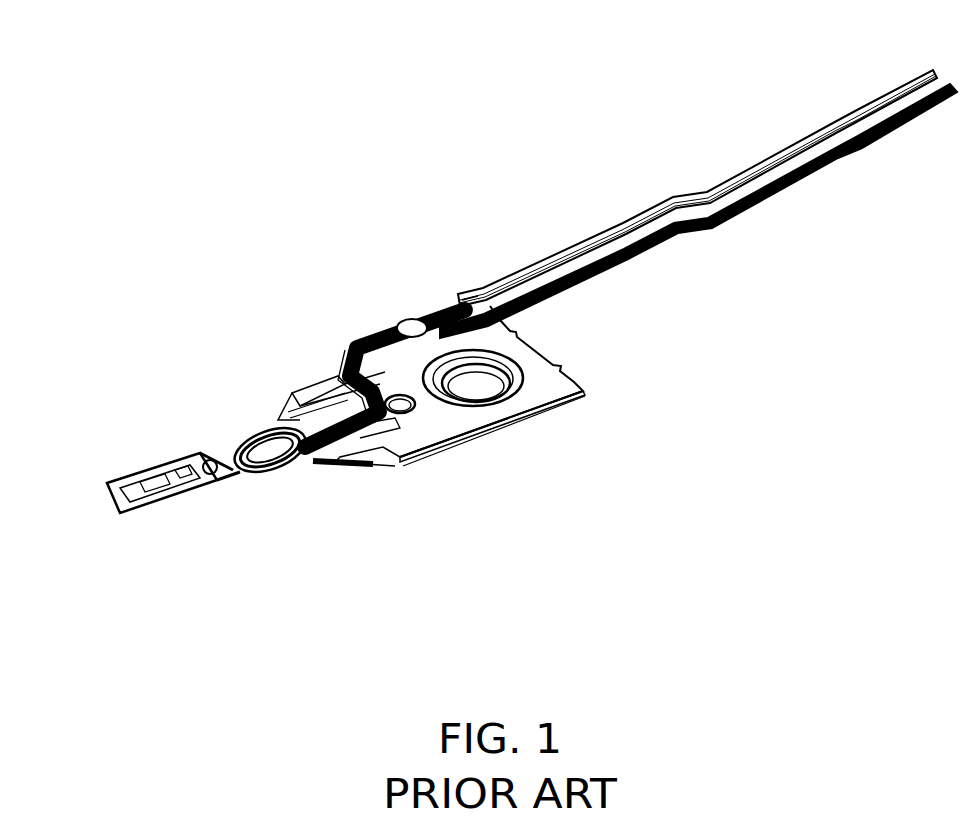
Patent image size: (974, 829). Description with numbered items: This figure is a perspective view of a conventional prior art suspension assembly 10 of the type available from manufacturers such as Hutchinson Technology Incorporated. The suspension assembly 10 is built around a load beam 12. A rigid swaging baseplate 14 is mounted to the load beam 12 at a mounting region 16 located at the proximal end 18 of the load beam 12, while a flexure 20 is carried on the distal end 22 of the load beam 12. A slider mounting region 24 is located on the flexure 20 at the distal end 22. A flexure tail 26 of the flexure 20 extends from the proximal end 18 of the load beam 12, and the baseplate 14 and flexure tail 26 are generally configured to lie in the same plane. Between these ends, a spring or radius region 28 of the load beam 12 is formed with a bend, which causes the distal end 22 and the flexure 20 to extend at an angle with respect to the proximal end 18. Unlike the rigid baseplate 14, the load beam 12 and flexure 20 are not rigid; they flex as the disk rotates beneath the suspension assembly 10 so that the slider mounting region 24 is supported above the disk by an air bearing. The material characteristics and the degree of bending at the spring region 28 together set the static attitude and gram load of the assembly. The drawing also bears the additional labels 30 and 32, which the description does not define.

The suspension assembly 10 is at (486, 152).
The load beam 12 is at (285, 405).
The rigid swaging baseplate 14 is at (505, 420).
The mounting region 16 is at (574, 409).
The proximal end 18 is at (400, 300).
The flexure 20 is at (280, 470).
The distal end 22 is at (209, 512).
The slider mounting region 24 is at (153, 467).
The flexure tail 26 is at (677, 233).
The spring region 28 is at (390, 455).
The swage hole 30 is at (495, 383).
The cable end 32 is at (835, 117).